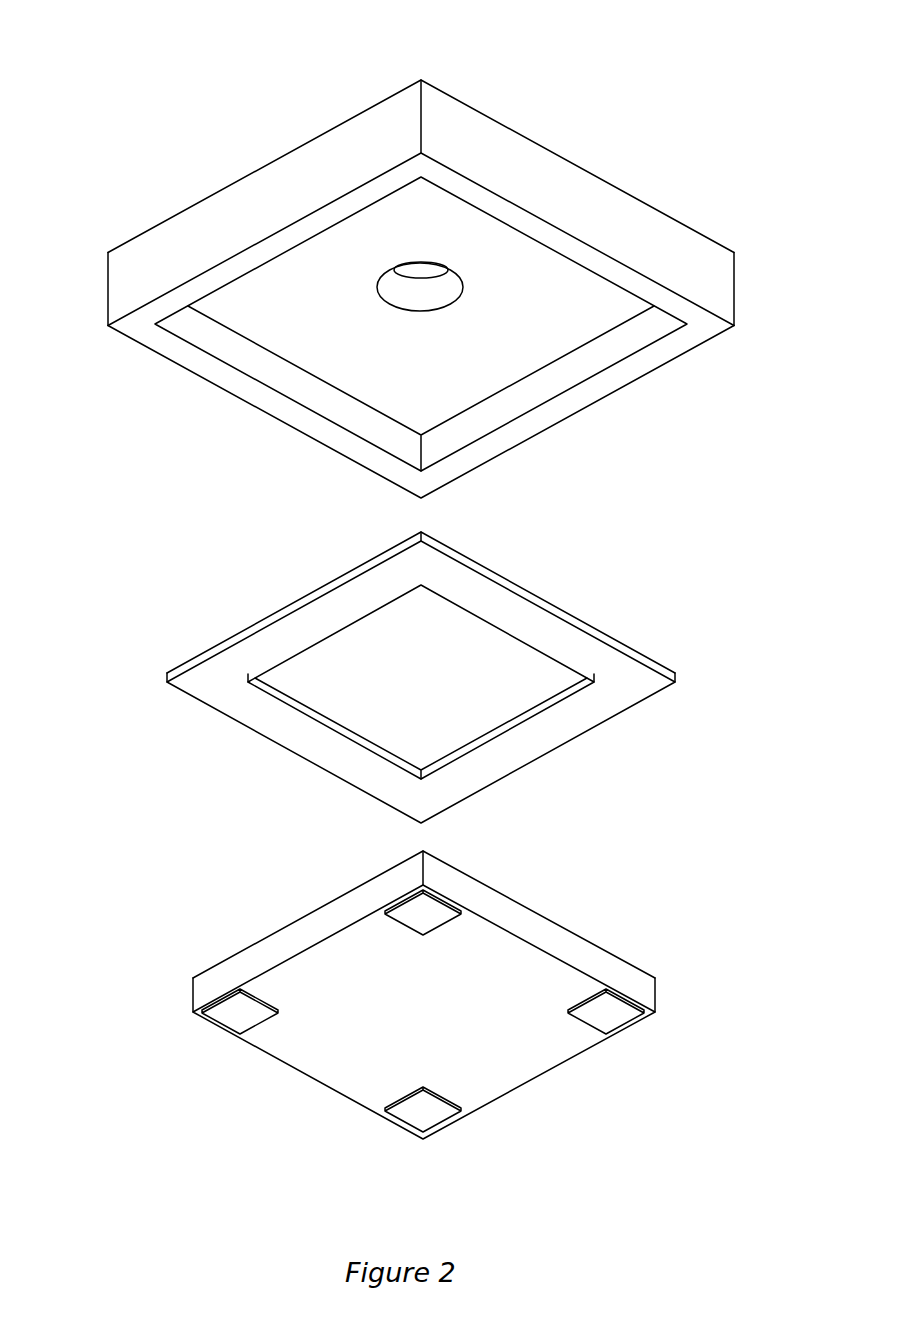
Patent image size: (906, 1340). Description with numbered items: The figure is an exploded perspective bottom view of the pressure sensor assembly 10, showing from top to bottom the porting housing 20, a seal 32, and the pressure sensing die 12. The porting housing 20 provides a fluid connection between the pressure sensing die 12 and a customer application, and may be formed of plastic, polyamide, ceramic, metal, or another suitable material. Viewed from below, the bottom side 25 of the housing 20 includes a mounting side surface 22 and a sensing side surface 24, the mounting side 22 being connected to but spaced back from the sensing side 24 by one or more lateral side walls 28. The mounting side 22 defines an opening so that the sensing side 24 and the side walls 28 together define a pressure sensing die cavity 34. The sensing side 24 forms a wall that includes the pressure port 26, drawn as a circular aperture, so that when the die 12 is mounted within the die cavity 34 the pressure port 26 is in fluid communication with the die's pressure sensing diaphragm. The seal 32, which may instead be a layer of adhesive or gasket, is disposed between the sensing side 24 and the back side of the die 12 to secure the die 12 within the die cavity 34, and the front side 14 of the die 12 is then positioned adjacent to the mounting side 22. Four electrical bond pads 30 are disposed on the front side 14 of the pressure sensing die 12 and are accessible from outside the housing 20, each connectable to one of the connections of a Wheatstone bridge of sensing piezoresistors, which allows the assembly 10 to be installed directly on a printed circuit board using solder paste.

The pressure sensor assembly 10 is at (100, 58).
The pressure sensing die 12 is at (665, 944).
The front side of the pressure sensing die 14 is at (487, 1078).
The porting housing 20 is at (727, 224).
The mounting side surface 22 is at (697, 330).
The sensing side surface 24 is at (263, 305).
The bottom side of the housing 25 is at (660, 418).
The pressure port 26 is at (448, 283).
The lateral side walls 28 is at (250, 202).
The electrical bond pads 30 is at (413, 917).
The seal 32 is at (607, 698).
The pressure sensing die cavity 34 is at (330, 357).